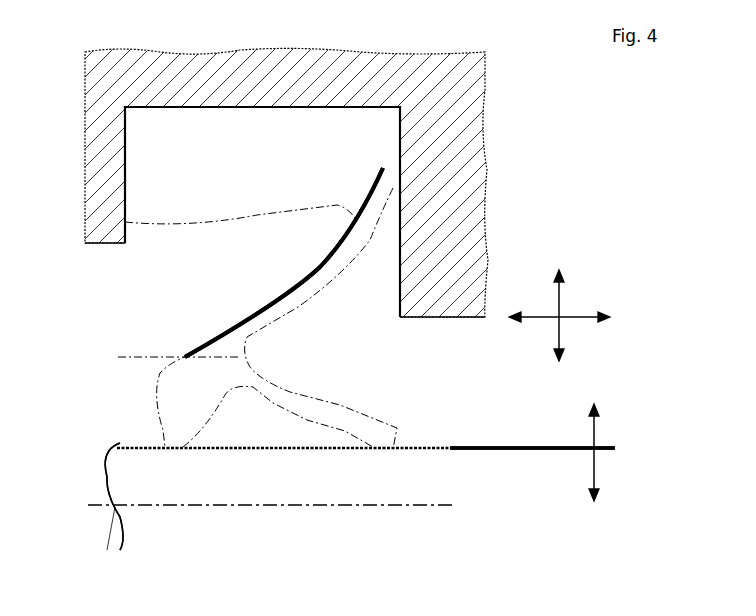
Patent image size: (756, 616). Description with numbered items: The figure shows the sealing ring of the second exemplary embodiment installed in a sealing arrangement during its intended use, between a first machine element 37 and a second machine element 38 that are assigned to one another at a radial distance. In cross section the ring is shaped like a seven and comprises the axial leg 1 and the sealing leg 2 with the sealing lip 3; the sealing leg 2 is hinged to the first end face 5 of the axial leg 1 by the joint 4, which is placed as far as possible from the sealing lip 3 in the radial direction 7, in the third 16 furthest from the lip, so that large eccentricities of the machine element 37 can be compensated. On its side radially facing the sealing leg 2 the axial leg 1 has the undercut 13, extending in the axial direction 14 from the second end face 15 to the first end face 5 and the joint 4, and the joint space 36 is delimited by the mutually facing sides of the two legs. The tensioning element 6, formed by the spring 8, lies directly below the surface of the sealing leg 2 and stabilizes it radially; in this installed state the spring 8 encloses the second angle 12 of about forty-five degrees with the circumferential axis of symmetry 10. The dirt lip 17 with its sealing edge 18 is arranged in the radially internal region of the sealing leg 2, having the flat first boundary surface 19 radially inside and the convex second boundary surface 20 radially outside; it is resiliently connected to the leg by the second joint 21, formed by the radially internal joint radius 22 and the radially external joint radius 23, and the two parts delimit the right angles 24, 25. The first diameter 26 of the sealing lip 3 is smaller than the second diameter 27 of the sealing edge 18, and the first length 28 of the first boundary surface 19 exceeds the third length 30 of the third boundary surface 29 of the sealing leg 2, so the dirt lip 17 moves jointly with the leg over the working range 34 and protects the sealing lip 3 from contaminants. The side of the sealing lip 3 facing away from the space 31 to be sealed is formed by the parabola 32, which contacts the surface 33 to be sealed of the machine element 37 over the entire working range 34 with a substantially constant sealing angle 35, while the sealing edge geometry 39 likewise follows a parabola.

The axial leg 1 is at (217, 154).
The sealing leg 2 is at (328, 267).
The sealing lip 3 is at (177, 422).
The joint 4 is at (376, 211).
The first end face 5 is at (398, 145).
The tensioning element 6 is at (265, 301).
The radial direction 7 is at (551, 315).
The spring 8 is at (265, 301).
The circumferential axis of symmetry 10 is at (183, 509).
The second angle 12 is at (223, 348).
The undercut 13 is at (257, 215).
The axial direction 14 is at (559, 326).
The second end face 15 is at (125, 130).
The third 16 is at (362, 182).
The dirt lip 17 is at (335, 408).
The sealing edge 18 is at (393, 449).
The first boundary surface 19 is at (345, 431).
The second boundary surface 20 is at (324, 385).
The second joint 21 is at (261, 378).
The radially internal joint radius 22 is at (238, 397).
The radially external joint radius 23 is at (258, 352).
The right angle 24 is at (238, 397).
The right angle 25 is at (258, 352).
The first diameter 26 is at (165, 447).
The second diameter 27 is at (393, 449).
The first length 28 is at (345, 431).
The third boundary surface 29 is at (213, 422).
The third length 30 is at (213, 422).
The space to be sealed 31 is at (145, 285).
The parabola 32 is at (213, 422).
The surface to be sealed 33 is at (287, 448).
The working range 34 is at (582, 451).
The sealing angle 35 is at (165, 447).
The joint space 36 is at (323, 223).
The first machine element 37 is at (137, 473).
The second machine element 38 is at (125, 78).
The sealing edge geometry 39 is at (213, 422).